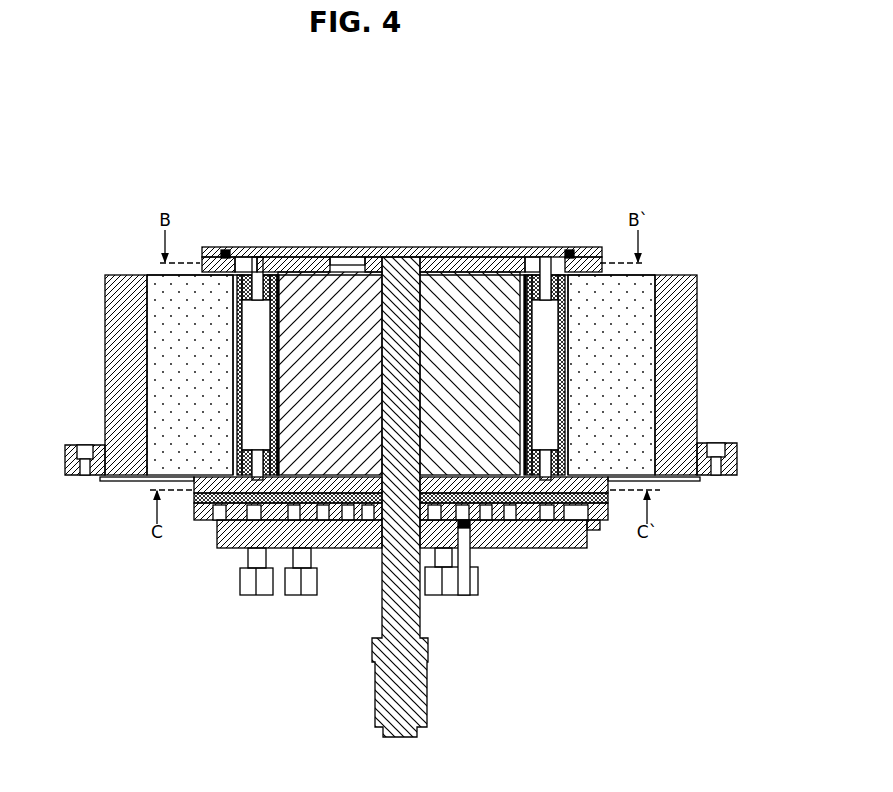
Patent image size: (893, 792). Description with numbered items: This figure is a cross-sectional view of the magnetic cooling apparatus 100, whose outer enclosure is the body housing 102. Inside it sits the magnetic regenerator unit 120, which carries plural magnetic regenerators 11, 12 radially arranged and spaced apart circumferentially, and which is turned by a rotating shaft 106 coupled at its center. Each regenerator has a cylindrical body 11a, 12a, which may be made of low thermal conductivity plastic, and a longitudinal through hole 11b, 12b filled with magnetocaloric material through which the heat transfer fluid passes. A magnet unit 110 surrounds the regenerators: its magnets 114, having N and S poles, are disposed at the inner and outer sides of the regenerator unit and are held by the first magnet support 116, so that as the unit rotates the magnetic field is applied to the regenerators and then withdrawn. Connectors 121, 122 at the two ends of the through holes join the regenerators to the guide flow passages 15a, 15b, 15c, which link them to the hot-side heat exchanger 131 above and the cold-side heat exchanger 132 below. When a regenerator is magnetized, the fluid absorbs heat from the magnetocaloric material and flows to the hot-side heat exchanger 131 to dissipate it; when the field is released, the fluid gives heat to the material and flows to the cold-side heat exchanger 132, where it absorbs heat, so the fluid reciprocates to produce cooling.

The magnetic cooling apparatus 100 is at (380, 104).
The body housing 102 is at (107, 398).
The rotating shaft 106 is at (428, 672).
The magnet unit 110 is at (337, 165).
The magnet 114 is at (188, 287).
The first magnet support 116 is at (320, 285).
The magnetic regenerator unit 120 is at (236, 425).
The connector 121 is at (563, 273).
The connector 122 is at (570, 450).
The hot-side heat exchanger 131 is at (423, 253).
The cold-side heat exchanger 132 is at (195, 530).
The magnetic regenerator 12 is at (51, 305).
The body 12a is at (237, 308).
The through hole 12b is at (255, 348).
The magnetic regenerator 11 is at (749, 305).
The body 11a is at (565, 308).
The through hole 11b is at (550, 348).
The guide flow passage 15a is at (543, 280).
The guide flow passage 15b is at (545, 530).
The guide flow passage 15c is at (543, 522).